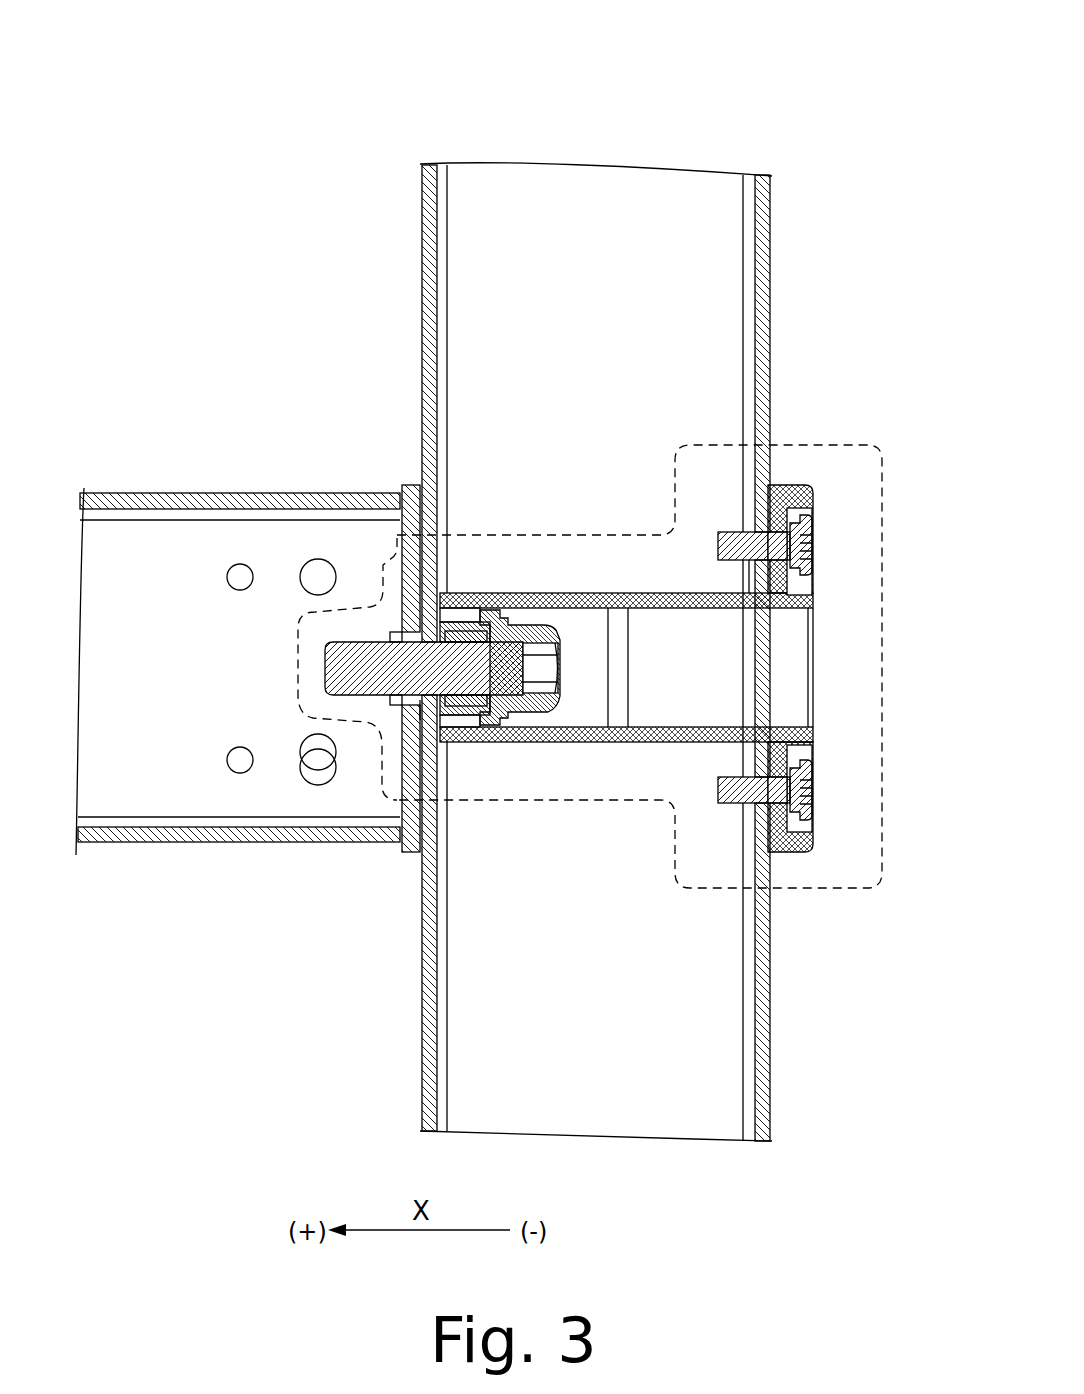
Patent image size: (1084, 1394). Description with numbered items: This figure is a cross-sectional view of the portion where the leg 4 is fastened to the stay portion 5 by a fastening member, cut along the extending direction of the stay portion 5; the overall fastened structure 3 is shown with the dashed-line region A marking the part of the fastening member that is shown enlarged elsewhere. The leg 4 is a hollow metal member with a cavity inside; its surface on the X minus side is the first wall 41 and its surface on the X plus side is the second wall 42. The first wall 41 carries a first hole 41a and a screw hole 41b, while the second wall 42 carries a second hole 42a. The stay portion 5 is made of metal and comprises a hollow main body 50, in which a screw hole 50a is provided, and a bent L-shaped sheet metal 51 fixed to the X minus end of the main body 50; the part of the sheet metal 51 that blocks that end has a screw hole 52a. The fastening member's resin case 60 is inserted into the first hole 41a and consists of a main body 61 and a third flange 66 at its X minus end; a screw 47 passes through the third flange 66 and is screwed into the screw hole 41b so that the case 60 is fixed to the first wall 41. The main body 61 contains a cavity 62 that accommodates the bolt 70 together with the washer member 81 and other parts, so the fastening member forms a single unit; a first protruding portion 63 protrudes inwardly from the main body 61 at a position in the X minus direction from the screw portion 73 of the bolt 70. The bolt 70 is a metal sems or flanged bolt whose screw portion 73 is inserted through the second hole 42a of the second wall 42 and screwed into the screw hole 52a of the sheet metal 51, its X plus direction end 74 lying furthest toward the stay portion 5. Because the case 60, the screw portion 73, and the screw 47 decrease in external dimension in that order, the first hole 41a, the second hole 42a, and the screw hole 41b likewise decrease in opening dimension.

The connection structure 3 is at (904, 64).
The leg 4 is at (605, 62).
The first wall 41 is at (768, 175).
The first hole 41a is at (740, 590).
The screw hole 41b is at (758, 526).
The second wall 42 is at (426, 164).
The second hole 42a is at (412, 718).
The screw 47 is at (800, 545).
The stay portion 5 is at (338, 388).
The main body 50 is at (157, 493).
The screw hole 50a is at (228, 578).
The sheet metal 51 is at (403, 485).
The screw hole 52a is at (366, 708).
The case 60 is at (538, 745).
The main body 61 is at (712, 745).
The cavity 62 is at (708, 667).
The first protruding portion 63 is at (640, 727).
The third flange 66 is at (800, 485).
The bolt 70 is at (527, 625).
The screw portion 73 is at (365, 640).
The X(+) direction end 74 is at (325, 665).
The washer member 81 is at (468, 625).
The region A is at (563, 533).